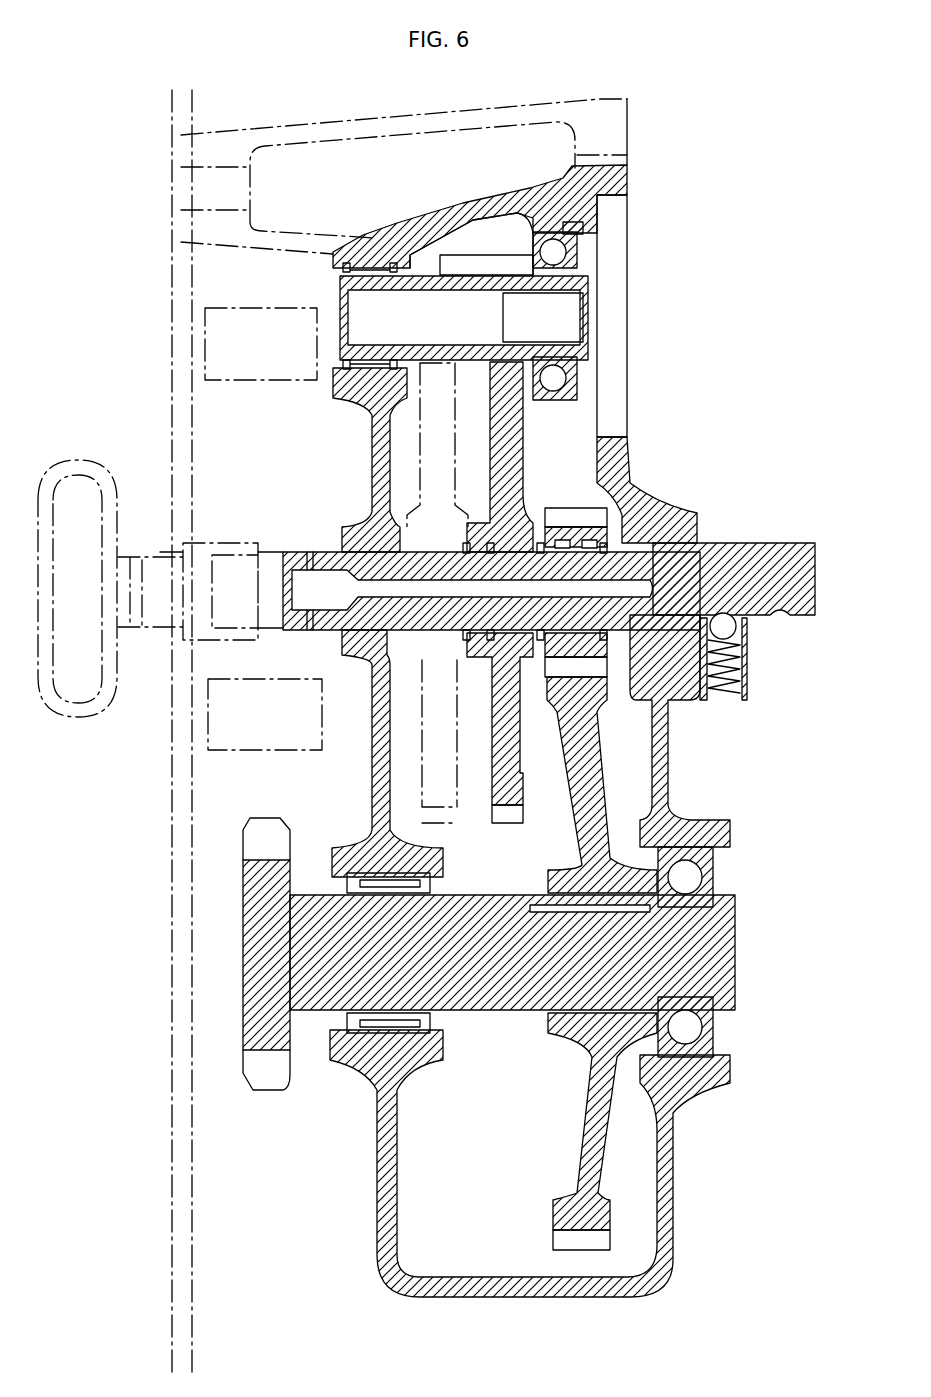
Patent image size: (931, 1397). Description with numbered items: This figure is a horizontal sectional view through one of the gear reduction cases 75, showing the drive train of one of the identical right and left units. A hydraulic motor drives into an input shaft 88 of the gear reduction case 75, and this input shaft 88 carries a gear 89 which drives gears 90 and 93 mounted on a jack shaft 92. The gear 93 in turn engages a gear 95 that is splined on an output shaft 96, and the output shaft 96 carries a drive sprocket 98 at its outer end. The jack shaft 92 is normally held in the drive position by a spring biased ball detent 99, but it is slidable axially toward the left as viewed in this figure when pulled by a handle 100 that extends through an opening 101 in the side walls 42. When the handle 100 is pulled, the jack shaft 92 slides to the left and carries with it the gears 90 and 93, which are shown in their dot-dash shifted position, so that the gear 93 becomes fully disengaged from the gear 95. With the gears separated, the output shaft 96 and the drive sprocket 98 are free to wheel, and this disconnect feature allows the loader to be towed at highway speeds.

The side walls 42 is at (170, 302).
The gear reduction case 75 is at (663, 438).
The input shaft 88 is at (560, 318).
The gear 89 is at (472, 262).
The gear 90 is at (500, 458).
The jack shaft 92 is at (733, 548).
The gear 93 is at (570, 508).
The gear 95 is at (588, 772).
The output shaft 96 is at (495, 992).
The drive sprocket 98 is at (277, 855).
The spring biased ball detent 99 is at (745, 656).
The handle 100 is at (97, 703).
The opening 101 is at (192, 557).